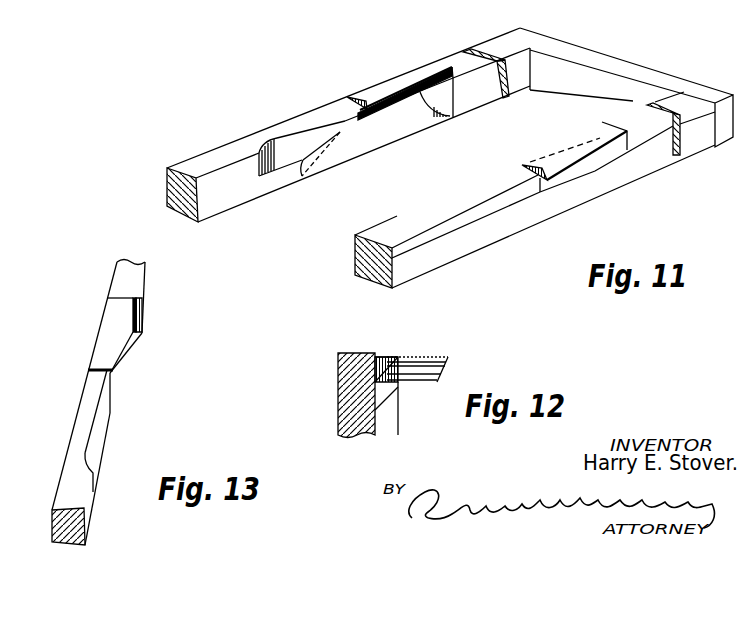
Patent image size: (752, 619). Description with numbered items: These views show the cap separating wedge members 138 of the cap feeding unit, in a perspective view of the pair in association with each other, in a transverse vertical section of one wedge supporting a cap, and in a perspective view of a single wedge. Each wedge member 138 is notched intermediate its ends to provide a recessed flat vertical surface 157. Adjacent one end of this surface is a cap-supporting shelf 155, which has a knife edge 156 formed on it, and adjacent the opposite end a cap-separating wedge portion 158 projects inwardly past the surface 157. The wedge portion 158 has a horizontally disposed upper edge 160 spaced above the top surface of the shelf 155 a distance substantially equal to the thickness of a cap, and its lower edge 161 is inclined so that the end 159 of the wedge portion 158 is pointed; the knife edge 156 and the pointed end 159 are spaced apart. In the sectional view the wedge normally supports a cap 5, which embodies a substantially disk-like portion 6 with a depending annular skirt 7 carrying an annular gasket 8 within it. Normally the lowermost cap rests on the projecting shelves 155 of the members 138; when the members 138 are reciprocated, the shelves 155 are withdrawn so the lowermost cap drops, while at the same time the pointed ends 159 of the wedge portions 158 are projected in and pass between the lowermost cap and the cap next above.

In FIG. 11, the cap separating wedge member 138 is at (457, 70).
In FIG. 13, the cap separating wedge member 138 is at (123, 273).
In FIG. 11, the cap-supporting shelf 155 is at (287, 162).
In FIG. 13, the cap-supporting shelf 155 is at (102, 435).
In FIG. 12, the cap-supporting shelf 155 is at (398, 393).
In FIG. 11, the knife edge 156 is at (335, 147).
In FIG. 13, the knife edge 156 is at (113, 412).
In FIG. 11, the recessed flat vertical surface 157 is at (373, 130).
In FIG. 13, the recessed flat vertical surface 157 is at (113, 378).
In FIG. 11, the cap-separating wedge portion 158 is at (405, 74).
In FIG. 13, the cap-separating wedge portion 158 is at (108, 302).
In FIG. 11, the pointed end of wedge portion 159 is at (347, 98).
In FIG. 13, the pointed end of wedge portion 159 is at (93, 370).
In FIG. 11, the horizontally disposed upper edge 160 is at (378, 95).
In FIG. 13, the horizontally disposed upper edge 160 is at (108, 335).
In FIG. 12, the horizontally disposed upper edge 160 is at (353, 353).
In FIG. 11, the inclined lower edge 161 is at (420, 93).
In FIG. 13, the inclined lower edge 161 is at (127, 332).
In FIG. 12, the inclined lower edge 161 is at (386, 363).
In FIG. 12, the cap 5 is at (447, 365).
In FIG. 12, the disk-like portion 6 is at (430, 358).
In FIG. 12, the annular skirt 7 is at (382, 357).
In FIG. 12, the annular gasket 8 is at (402, 382).